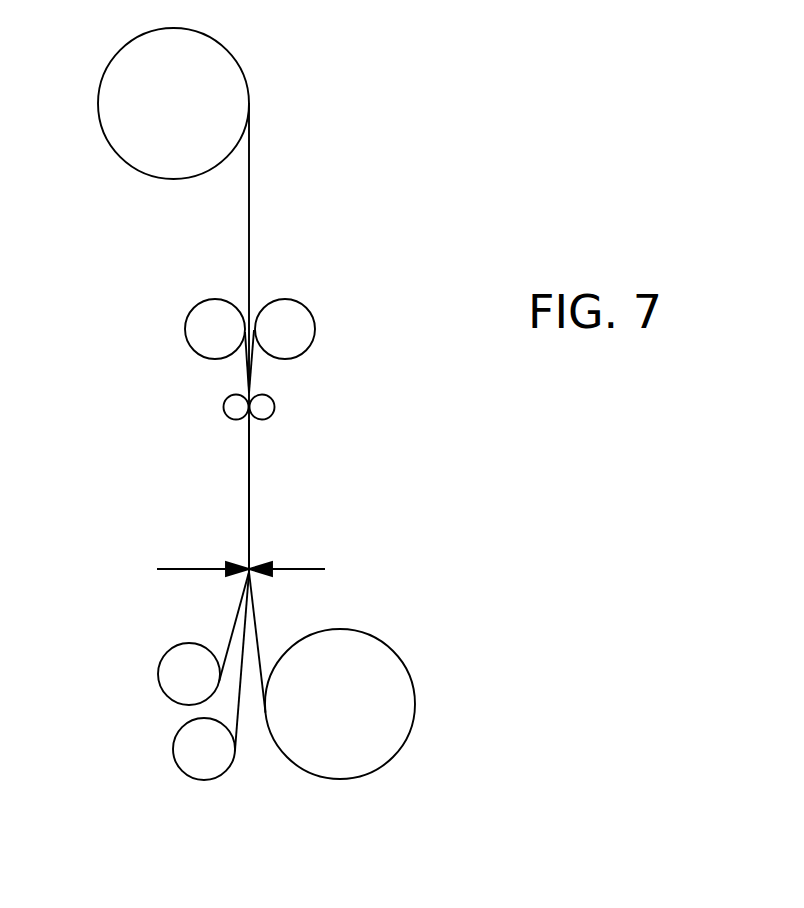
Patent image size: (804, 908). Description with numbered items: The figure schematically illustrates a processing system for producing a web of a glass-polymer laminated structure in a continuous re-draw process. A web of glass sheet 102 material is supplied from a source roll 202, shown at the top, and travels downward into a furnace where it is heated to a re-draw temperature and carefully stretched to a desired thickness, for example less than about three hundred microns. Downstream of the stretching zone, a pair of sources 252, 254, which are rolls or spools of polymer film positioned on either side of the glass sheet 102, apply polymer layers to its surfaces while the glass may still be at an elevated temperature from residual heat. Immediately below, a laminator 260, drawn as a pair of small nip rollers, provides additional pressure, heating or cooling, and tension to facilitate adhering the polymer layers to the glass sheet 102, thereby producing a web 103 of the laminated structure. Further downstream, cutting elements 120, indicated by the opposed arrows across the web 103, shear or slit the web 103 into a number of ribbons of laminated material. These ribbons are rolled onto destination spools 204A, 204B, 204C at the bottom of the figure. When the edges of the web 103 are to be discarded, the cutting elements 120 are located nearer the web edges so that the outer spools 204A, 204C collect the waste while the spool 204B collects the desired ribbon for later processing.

The source roll 202 is at (122, 162).
The glass sheet 102 is at (249, 228).
The source of polymer film 252 is at (188, 343).
The source of polymer film 254 is at (307, 348).
The laminator 260 is at (275, 412).
The web of laminated structure 103 is at (249, 482).
The cutting elements 120 is at (182, 567).
The destination spool 204A is at (168, 650).
The destination spool 204B is at (415, 703).
The destination spool 204C is at (177, 762).